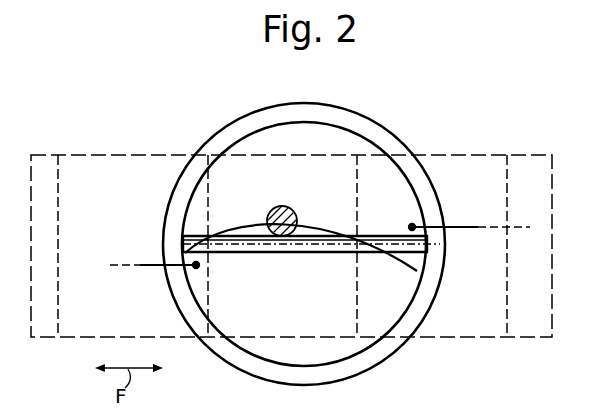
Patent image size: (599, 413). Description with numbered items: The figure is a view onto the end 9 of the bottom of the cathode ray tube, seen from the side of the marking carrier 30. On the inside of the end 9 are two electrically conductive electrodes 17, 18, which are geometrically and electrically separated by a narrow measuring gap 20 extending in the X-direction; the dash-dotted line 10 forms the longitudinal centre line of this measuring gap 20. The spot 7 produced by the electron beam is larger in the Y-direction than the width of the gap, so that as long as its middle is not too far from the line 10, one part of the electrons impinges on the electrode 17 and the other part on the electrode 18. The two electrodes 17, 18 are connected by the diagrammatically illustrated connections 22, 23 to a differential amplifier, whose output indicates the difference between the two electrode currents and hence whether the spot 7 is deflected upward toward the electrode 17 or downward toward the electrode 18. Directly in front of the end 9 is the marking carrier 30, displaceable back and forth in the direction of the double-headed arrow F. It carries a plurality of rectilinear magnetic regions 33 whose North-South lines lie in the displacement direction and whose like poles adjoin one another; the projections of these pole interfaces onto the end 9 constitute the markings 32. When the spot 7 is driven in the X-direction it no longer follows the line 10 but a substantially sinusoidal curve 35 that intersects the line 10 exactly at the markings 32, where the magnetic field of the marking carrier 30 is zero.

The spot 7 is at (292, 212).
The end of the tube 9 is at (388, 132).
The dash-dotted line 10 is at (427, 245).
The electrode 17 is at (190, 210).
The electrode 18 is at (194, 297).
The measuring gap 20 is at (256, 253).
The connection 22 is at (478, 227).
The connection 23 is at (147, 265).
The marking carrier 30 is at (546, 152).
The markings 32 is at (58, 330).
The magnetic regions 33 is at (42, 322).
The sinusoidal curve 35 is at (262, 225).